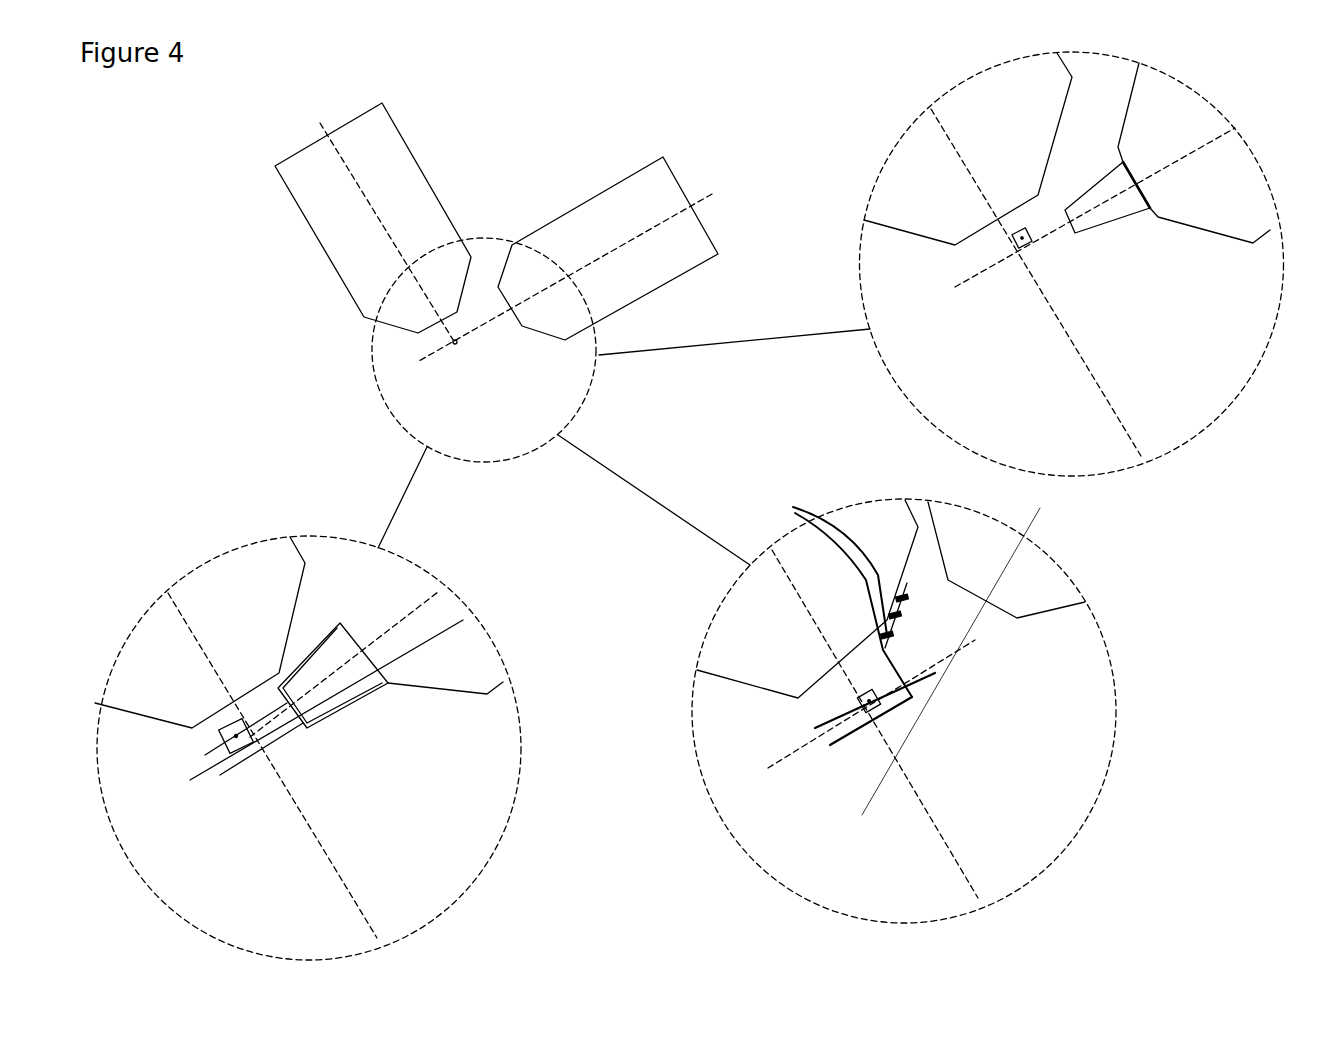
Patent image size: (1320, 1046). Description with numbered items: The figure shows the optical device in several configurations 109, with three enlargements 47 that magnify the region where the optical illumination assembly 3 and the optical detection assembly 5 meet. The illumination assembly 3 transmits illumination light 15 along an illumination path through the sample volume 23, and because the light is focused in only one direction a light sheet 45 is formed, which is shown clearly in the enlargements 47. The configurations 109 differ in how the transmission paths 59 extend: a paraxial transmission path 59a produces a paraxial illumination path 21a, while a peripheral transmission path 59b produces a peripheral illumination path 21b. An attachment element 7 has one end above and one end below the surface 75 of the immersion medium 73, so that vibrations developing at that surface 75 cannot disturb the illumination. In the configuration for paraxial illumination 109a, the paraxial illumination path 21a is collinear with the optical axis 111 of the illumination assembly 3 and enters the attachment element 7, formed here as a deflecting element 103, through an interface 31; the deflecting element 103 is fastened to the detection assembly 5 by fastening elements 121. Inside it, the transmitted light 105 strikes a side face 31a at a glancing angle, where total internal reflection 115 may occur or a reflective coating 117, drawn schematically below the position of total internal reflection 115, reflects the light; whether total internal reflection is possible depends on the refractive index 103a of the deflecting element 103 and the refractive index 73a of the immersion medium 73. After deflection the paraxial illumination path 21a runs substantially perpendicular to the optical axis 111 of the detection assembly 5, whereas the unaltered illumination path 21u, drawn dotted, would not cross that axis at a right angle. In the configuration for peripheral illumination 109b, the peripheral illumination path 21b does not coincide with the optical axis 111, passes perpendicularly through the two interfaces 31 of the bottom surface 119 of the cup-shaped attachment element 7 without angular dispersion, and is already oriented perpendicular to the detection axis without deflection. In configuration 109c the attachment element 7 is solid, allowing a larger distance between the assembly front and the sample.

The optical illumination assembly 3 is at (624, 204).
The optical detection assembly 5 is at (322, 226).
The attachment element 7 is at (631, 611).
The illumination light 15 is at (373, 702).
The paraxial illumination path 21a is at (219, 778).
The peripheral illumination path 21b is at (203, 770).
The unaltered illumination path 21u is at (870, 795).
The sample volume 23 is at (455, 336).
The interface 31 is at (330, 717).
The side face 31a is at (970, 650).
The light sheet 45 is at (292, 733).
The enlargements 47 is at (708, 506).
The transmission paths 59 is at (411, 681).
The paraxial transmission path 59a is at (438, 592).
The peripheral transmission path 59b is at (448, 630).
The immersion medium 73 is at (735, 512).
The refractive index of immersion medium 73a is at (898, 869).
The surface 75 is at (287, 673).
The deflecting element 103 is at (897, 657).
The refractive index of deflecting element 103a is at (892, 636).
The transmitted light 105 is at (963, 645).
The configurations 109 is at (708, 506).
The configuration for paraxial illumination 109a is at (1048, 867).
The configuration for peripheral illumination 109b is at (483, 868).
The configuration with solid attachment element 109c is at (1223, 415).
The optical axis 111 is at (1033, 522).
The total internal reflection 115 is at (955, 665).
The reflective coating 117 is at (935, 683).
The bottom surface 119 is at (267, 697).
The fastening elements 121 is at (793, 507).